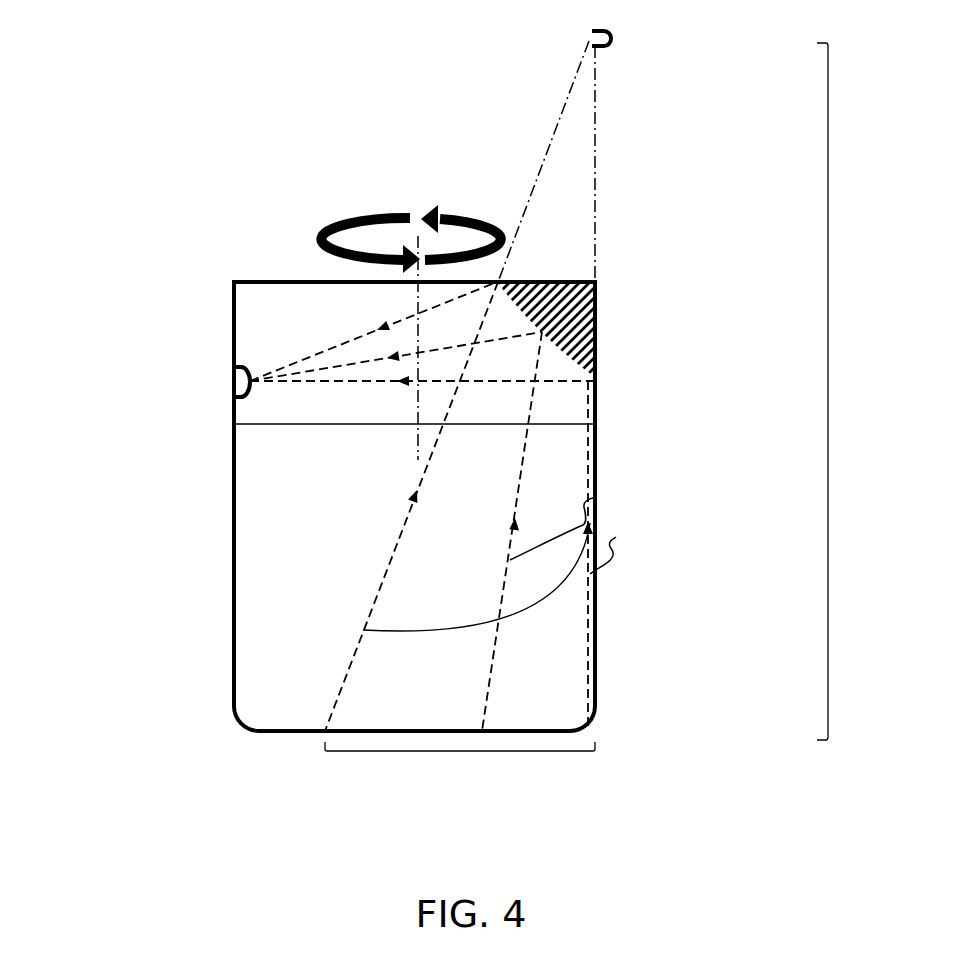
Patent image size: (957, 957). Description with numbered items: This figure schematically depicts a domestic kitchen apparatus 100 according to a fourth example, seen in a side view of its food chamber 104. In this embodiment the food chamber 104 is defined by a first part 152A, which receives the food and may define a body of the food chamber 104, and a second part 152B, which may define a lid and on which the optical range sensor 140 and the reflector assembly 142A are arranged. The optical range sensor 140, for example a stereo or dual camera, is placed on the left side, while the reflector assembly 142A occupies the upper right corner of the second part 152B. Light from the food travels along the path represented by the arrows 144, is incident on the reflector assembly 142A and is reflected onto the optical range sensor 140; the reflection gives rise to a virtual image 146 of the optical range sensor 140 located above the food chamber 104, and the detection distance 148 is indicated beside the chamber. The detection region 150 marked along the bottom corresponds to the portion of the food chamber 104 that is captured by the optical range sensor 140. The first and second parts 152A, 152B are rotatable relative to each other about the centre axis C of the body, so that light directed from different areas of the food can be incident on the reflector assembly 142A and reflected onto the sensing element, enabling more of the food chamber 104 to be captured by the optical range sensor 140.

The domestic kitchen apparatus 100 is at (127, 203).
The food chamber 104 is at (278, 644).
The optical range sensor 140 is at (236, 373).
The reflector assembly 142A is at (596, 284).
The arrows 144 is at (592, 520).
The virtual image 146 is at (589, 40).
The detection distance 148 is at (828, 392).
The detection region 150 is at (460, 751).
The first part 152A is at (234, 500).
The second part 152B is at (278, 281).
The centre axis C is at (415, 247).